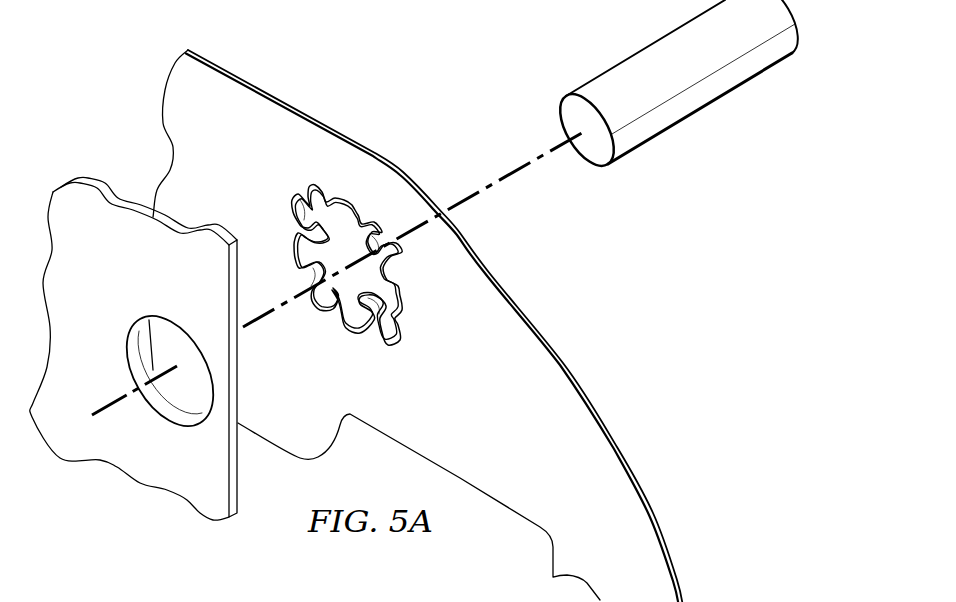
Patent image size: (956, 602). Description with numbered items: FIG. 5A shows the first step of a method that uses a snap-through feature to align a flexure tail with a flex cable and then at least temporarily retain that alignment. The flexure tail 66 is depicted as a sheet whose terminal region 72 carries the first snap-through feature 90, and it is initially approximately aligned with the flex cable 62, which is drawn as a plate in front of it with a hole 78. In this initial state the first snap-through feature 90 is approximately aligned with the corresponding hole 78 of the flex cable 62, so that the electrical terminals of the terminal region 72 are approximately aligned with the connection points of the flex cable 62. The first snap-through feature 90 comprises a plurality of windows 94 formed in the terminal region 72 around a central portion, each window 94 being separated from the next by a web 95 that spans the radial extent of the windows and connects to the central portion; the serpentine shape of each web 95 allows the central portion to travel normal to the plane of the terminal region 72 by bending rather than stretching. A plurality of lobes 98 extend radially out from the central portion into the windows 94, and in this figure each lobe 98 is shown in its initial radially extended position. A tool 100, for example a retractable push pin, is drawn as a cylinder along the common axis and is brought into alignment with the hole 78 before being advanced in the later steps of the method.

The flex cable 62 is at (133, 337).
The flexure tail 66 is at (553, 383).
The terminal region 72 is at (416, 325).
The hole 78 is at (182, 343).
The first snap-through feature 90 is at (377, 275).
The windows 94 is at (327, 187).
The web 95 is at (363, 217).
The lobes 98 is at (340, 217).
The tool 100 is at (697, 110).